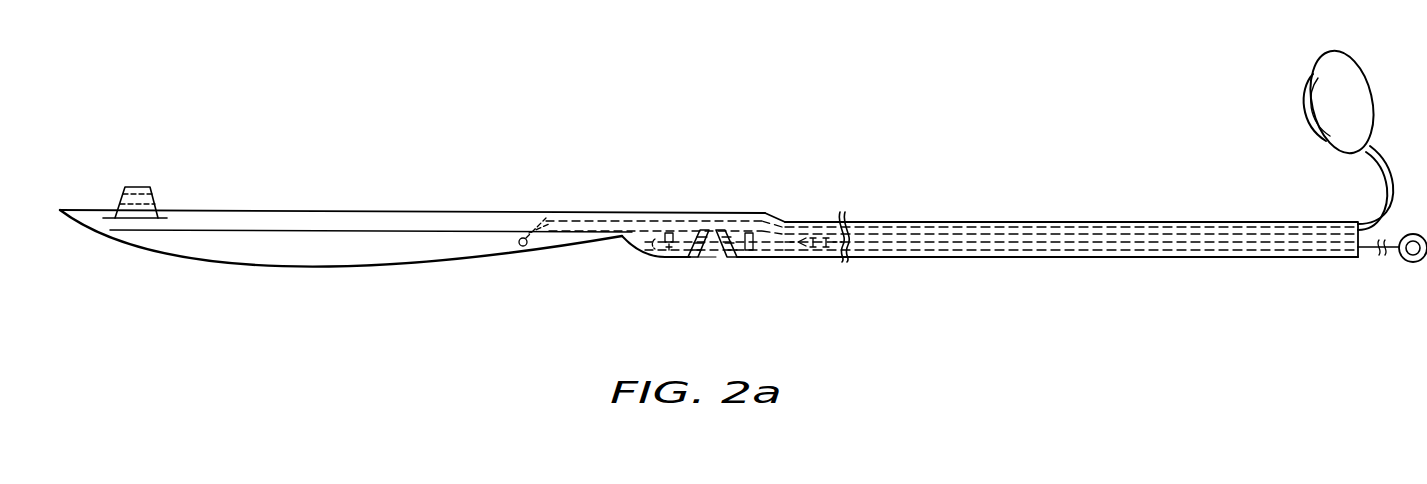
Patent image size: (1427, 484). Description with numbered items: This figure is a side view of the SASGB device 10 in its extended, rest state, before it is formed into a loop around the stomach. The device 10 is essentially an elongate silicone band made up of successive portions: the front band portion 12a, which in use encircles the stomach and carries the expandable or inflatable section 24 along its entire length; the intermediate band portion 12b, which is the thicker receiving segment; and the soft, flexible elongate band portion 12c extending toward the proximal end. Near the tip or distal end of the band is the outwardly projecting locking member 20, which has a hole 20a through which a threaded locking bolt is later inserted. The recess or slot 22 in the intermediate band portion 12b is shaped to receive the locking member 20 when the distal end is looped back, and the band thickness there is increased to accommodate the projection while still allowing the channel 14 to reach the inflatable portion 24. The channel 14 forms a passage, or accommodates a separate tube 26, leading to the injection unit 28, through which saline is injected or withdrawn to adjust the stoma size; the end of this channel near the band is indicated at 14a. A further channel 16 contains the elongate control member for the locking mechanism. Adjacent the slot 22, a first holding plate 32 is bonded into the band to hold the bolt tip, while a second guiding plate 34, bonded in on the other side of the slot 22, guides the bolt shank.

The SASGB device 10 is at (806, 128).
The band portion 12a is at (428, 210).
The intermediate band portion 12b is at (718, 213).
The elongate band portion 12c is at (1266, 258).
The channel 14 is at (1105, 222).
The cable end loop 14a is at (520, 248).
The channel 16 is at (1130, 258).
The locking member 20 is at (127, 186).
The hole 20a is at (153, 200).
The recess or slot 22 is at (706, 260).
The expandable section 24 is at (322, 264).
The tube 26 is at (1383, 200).
The injection unit 28 is at (1302, 100).
The holding plate 32 is at (665, 257).
The guiding plate 34 is at (812, 258).